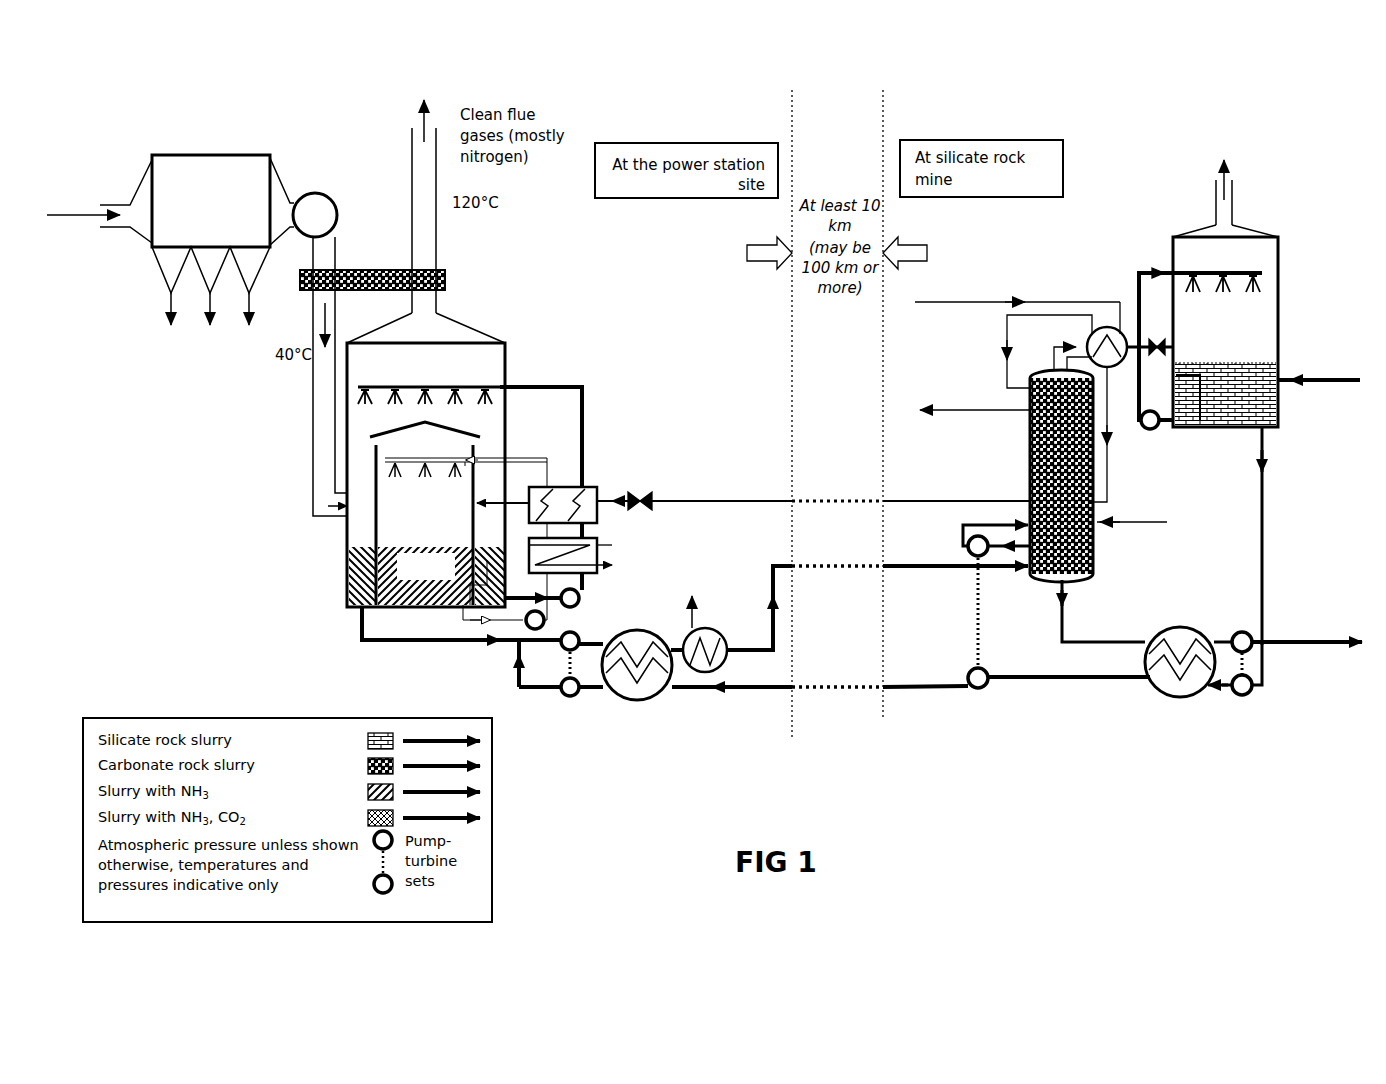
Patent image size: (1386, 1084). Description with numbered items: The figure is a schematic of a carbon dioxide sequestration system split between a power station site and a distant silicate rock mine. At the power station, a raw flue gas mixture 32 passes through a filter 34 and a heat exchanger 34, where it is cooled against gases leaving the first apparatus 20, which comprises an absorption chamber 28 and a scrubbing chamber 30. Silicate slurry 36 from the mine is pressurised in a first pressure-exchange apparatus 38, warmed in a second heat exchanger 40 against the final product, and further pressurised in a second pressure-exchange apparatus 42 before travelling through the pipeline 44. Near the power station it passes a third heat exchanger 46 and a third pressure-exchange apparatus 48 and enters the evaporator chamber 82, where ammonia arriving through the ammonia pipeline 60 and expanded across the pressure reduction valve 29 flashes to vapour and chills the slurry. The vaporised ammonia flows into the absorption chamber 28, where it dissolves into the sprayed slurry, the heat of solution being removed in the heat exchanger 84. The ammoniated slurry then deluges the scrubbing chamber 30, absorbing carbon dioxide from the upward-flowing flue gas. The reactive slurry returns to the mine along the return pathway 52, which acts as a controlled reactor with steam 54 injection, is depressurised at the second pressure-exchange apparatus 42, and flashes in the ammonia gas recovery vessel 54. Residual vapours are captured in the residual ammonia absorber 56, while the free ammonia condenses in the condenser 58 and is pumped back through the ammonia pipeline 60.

The first apparatus 20 is at (310, 563).
The absorption chamber 28 is at (366, 463).
The pressure reduction valve 29 is at (655, 492).
The scrubbing chamber 30 is at (510, 472).
The raw flue gas mixture feed stream 32 is at (99, 205).
The filter and heat exchanger 34 is at (216, 154).
The silicate slurry 36 is at (1337, 368).
The first pressure-exchange apparatus 38 is at (1245, 708).
The second heat exchanger 40 is at (1158, 702).
The second pressure-exchange apparatus 42 is at (982, 697).
The pipeline 44 is at (827, 680).
The third heat exchanger 46 is at (637, 703).
The third pressure-exchange apparatus 48 is at (570, 700).
The return pathway 52 is at (798, 590).
The ammonia gas recovery vessel 54 is at (1025, 476).
The residual ammonia absorber 56 is at (1202, 434).
The condenser 58 is at (1044, 402).
The ammonia pipeline 60 is at (878, 494).
The evaporator chamber 82 is at (565, 481).
The heat exchanger 84 is at (592, 582).